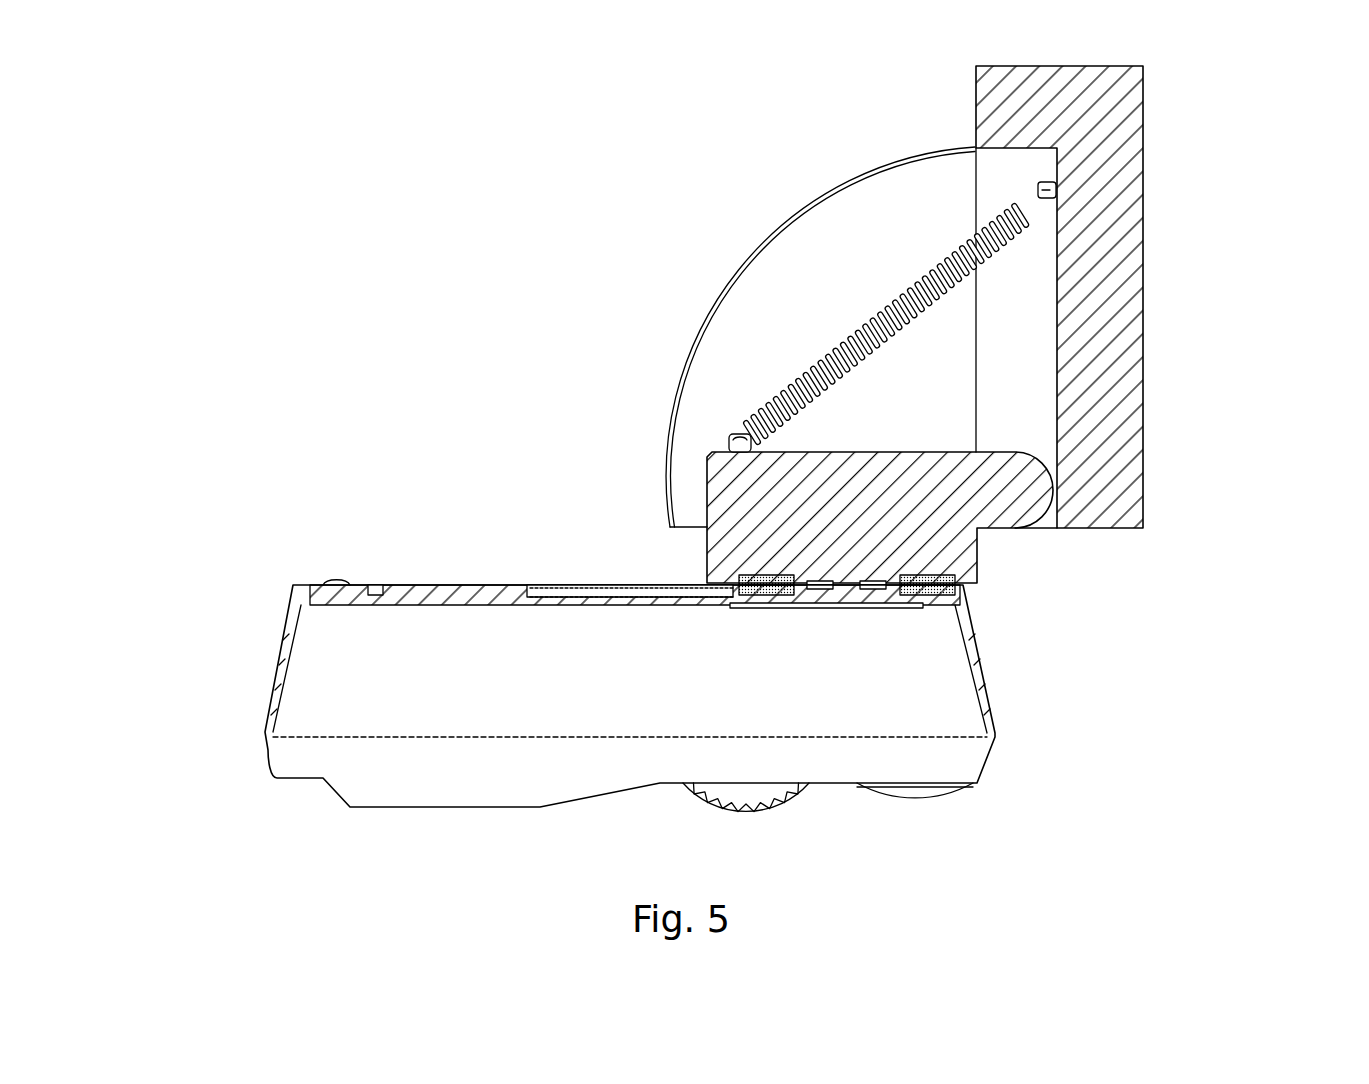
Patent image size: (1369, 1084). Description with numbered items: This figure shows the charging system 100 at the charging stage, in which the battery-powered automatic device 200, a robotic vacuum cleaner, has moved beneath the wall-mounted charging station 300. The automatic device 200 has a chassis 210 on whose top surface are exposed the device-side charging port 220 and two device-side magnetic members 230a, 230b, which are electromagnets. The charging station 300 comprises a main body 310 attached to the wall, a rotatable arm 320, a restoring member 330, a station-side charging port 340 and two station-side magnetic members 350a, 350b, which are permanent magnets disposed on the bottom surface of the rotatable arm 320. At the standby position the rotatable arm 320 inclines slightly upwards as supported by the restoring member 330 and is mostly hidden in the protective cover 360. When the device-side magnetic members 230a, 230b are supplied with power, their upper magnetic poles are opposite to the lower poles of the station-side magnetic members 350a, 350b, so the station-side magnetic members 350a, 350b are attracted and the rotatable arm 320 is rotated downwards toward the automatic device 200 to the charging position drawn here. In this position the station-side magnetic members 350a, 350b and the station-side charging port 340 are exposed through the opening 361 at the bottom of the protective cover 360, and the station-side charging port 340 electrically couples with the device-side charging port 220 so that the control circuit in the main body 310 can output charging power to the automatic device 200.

The charging system 100 is at (207, 84).
The automatic device 200 is at (233, 688).
The chassis 210 is at (287, 631).
The device-side charging port 220 is at (822, 590).
The device-side magnetic member 230a is at (760, 595).
The device-side magnetic member 230b is at (945, 598).
The charging station 300 is at (1172, 210).
The main body 310 is at (1128, 130).
The rotatable arm 320 is at (735, 490).
The restoring member 330 is at (945, 260).
The station-side charging port 340 is at (870, 582).
The station-side magnetic member 350a is at (747, 575).
The station-side magnetic member 350b is at (980, 580).
The protective cover 360 is at (752, 266).
The opening 361 is at (682, 540).